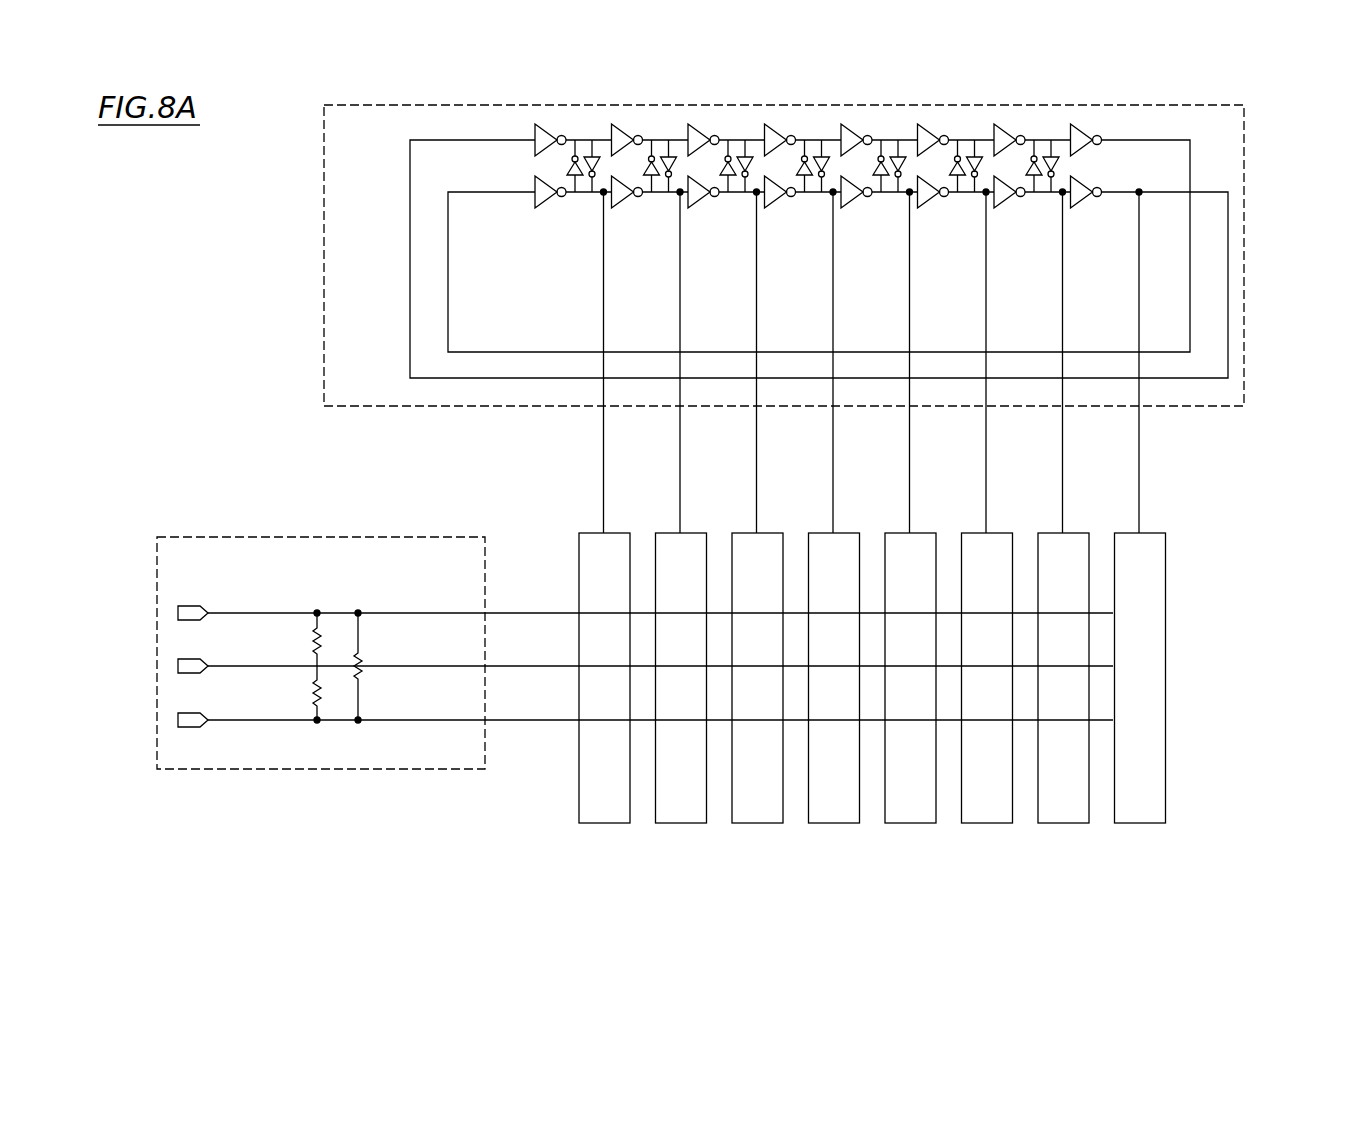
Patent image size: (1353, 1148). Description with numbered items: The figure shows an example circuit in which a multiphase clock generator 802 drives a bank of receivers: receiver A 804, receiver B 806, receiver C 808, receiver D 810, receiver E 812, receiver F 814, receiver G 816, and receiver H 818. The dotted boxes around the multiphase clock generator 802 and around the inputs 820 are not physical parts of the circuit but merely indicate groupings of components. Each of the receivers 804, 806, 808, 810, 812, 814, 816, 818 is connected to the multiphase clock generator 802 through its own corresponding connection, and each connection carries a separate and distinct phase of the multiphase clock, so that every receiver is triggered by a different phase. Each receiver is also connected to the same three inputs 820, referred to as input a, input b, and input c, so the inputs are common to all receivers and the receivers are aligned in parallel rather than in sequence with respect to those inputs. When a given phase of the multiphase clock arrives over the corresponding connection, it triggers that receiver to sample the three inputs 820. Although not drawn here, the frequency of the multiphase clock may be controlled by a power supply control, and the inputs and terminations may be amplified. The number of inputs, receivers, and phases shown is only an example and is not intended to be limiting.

The multiphase clock generator 802 is at (427, 406).
The receiver A 804 is at (580, 781).
The receiver B 806 is at (668, 823).
The receiver C 808 is at (763, 823).
The receiver D 810 is at (851, 823).
The receiver E 812 is at (928, 823).
The receiver F 814 is at (1000, 823).
The receiver G 816 is at (1088, 738).
The receiver H 818 is at (1141, 823).
The inputs 820 is at (252, 769).